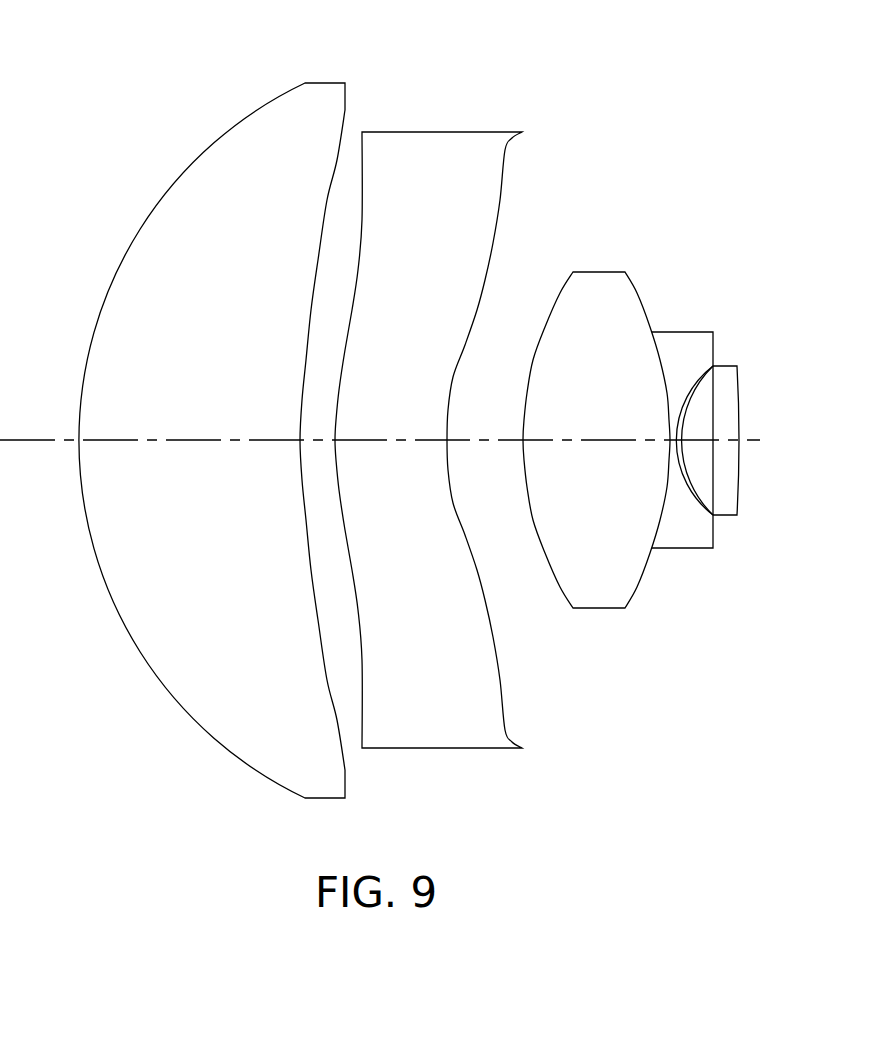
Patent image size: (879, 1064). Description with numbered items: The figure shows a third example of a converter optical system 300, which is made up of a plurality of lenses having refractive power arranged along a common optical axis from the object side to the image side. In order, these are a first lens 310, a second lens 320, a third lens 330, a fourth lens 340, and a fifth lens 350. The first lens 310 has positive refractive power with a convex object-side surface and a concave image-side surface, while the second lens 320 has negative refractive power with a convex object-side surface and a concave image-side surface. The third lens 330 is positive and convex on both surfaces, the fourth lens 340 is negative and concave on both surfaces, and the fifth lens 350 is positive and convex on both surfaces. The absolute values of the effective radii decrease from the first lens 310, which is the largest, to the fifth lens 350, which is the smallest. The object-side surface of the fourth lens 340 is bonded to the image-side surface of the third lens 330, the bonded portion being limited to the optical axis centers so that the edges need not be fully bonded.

The converter optical system 300 is at (455, 88).
The first lens 310 is at (345, 783).
The second lens 320 is at (473, 752).
The third lens 330 is at (598, 612).
The fourth lens 340 is at (680, 552).
The fifth lens 350 is at (720, 517).